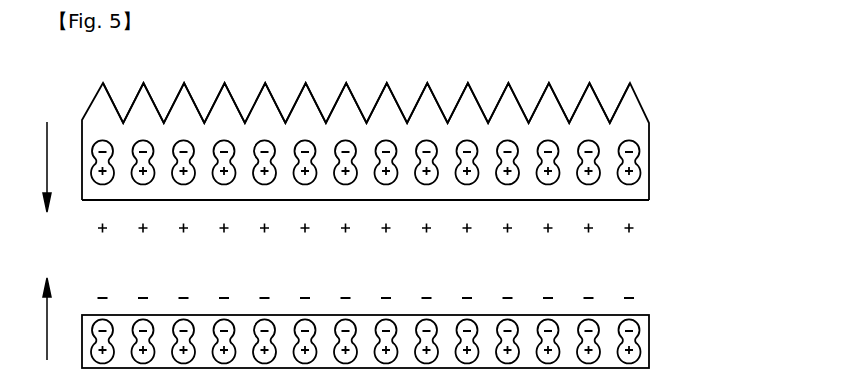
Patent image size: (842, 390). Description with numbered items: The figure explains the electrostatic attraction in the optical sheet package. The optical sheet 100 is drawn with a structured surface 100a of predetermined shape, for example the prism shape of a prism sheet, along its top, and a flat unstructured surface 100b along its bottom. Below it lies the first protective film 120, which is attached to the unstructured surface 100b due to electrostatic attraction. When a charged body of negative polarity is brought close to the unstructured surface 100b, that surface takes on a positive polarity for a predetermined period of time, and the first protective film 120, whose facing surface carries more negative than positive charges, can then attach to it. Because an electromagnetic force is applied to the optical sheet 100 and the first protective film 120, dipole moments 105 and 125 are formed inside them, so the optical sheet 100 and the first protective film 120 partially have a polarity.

The optical sheet 100 is at (634, 193).
The structured surface 100a is at (630, 83).
The unstructured surface 100b is at (637, 201).
The dipole moment 105 is at (628, 147).
The first protective film 120 is at (640, 333).
The dipole moment 125 is at (633, 360).